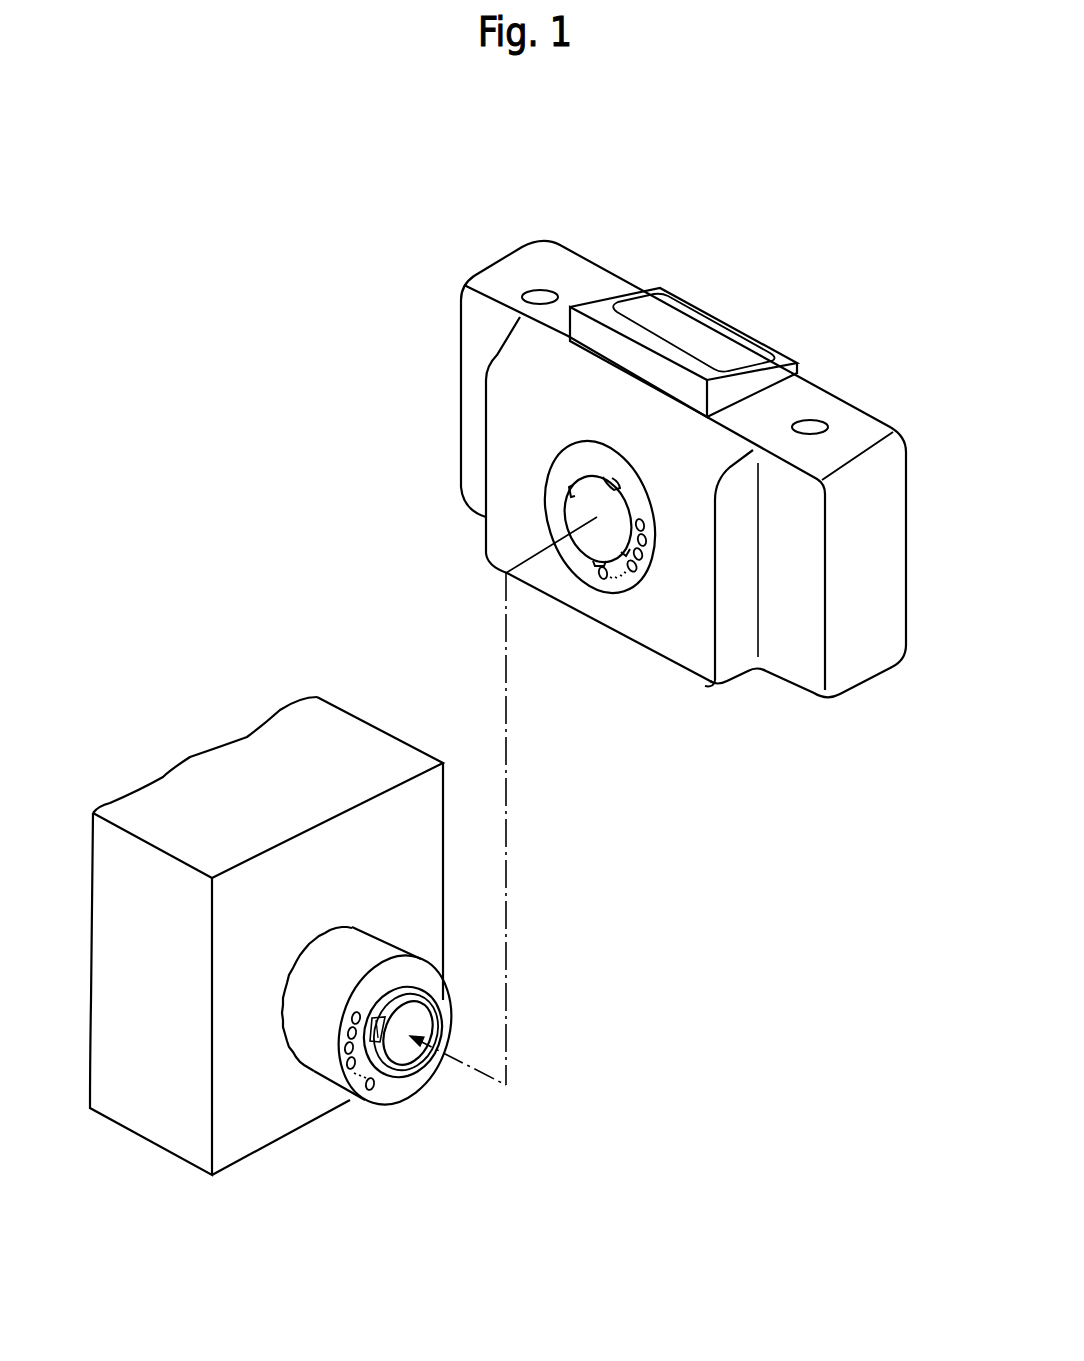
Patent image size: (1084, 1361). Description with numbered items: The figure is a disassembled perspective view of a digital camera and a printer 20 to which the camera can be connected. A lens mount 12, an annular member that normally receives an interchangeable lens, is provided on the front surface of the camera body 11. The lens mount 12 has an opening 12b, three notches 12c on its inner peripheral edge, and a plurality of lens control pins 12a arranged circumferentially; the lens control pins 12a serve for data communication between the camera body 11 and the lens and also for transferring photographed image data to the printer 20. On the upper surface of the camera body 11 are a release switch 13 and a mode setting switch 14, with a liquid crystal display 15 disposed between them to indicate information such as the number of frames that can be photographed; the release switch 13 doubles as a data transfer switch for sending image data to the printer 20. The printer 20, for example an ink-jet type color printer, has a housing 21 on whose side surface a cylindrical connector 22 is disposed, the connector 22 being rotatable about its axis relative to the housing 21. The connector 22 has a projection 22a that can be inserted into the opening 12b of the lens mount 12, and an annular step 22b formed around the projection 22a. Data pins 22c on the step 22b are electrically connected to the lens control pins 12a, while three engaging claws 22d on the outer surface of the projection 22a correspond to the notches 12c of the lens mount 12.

The camera body 11 is at (460, 376).
The lens mount 12 is at (555, 513).
The lens control pins 12a is at (640, 557).
The opening 12b is at (592, 487).
The notches 12c is at (612, 481).
The release switch 13 is at (540, 294).
The mode setting switch 14 is at (810, 427).
The liquid crystal display 15 is at (693, 332).
The printer 20 is at (330, 701).
The housing 21 is at (363, 747).
The connector 22 is at (320, 1082).
The projection 22a is at (420, 1067).
The annular step 22b is at (437, 983).
The data pins 22c is at (353, 1073).
The engaging claws 22d is at (445, 1012).